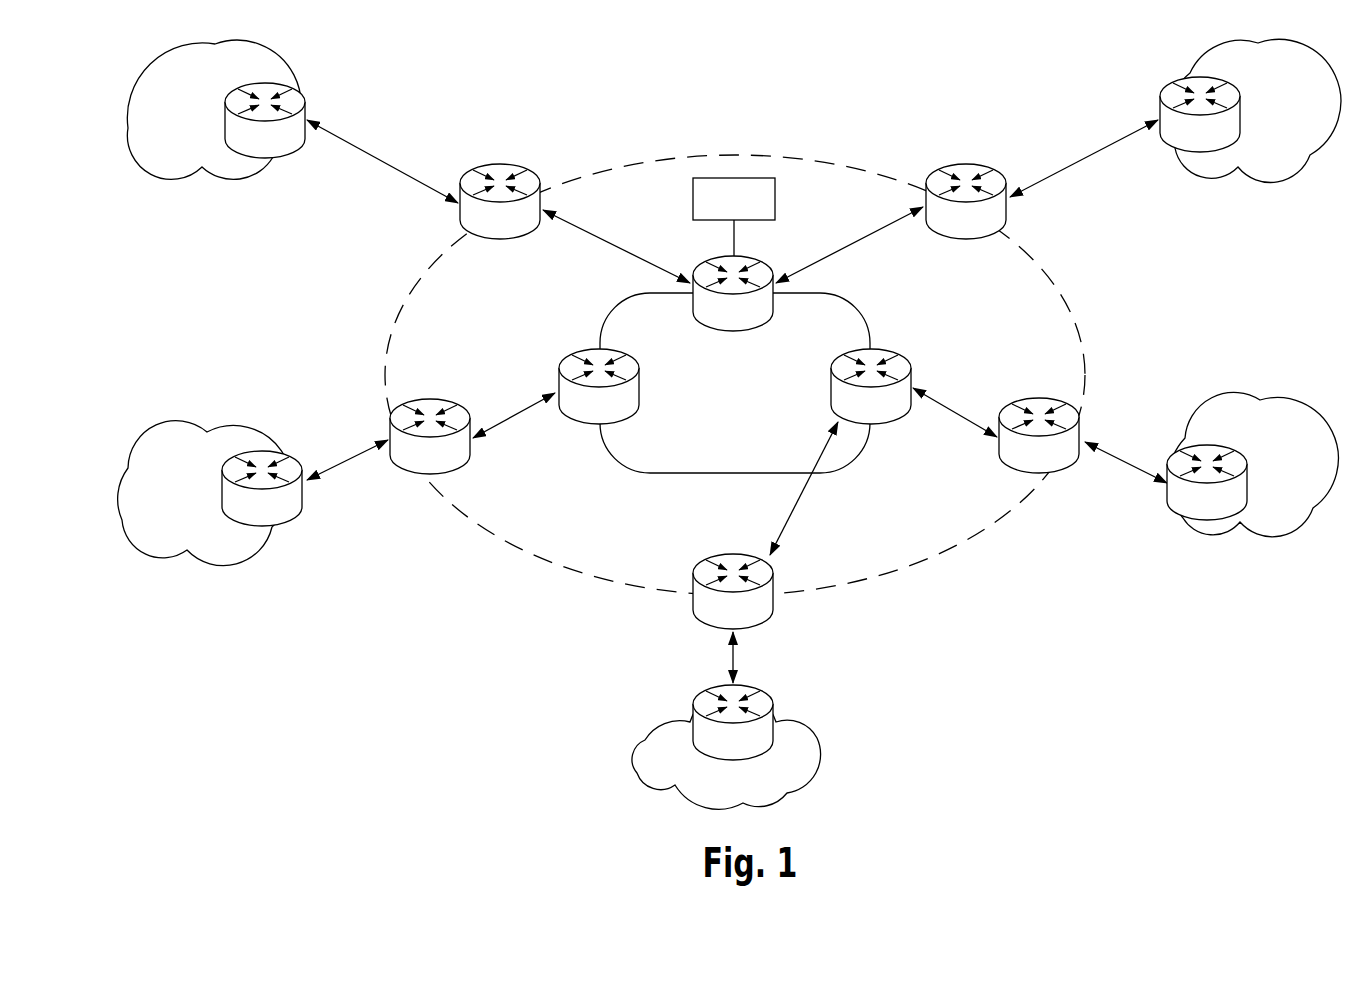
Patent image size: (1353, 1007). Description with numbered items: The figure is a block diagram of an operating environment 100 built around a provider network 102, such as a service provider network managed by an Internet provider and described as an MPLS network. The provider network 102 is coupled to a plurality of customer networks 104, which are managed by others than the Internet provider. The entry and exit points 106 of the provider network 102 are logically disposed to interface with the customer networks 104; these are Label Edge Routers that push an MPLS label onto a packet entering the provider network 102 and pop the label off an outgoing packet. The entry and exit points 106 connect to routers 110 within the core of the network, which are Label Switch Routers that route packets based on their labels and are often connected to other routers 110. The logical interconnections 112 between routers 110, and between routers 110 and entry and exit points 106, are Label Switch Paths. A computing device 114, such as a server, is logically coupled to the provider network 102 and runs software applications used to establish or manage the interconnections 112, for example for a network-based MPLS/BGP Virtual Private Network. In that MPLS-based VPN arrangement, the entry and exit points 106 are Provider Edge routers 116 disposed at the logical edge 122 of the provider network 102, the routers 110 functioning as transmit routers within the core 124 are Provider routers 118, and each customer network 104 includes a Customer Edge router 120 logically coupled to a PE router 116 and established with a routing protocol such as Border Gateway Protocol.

The operating environment 100 is at (793, 97).
The provider network 102 is at (862, 157).
The customer networks 104 is at (147, 128).
The entry and exit points 106 is at (421, 193).
The routers 110 is at (730, 314).
The logical interconnections 112 is at (628, 261).
The computing device 114 is at (716, 217).
The Provider Edge router 116 is at (735, 411).
The Provider router 118 is at (735, 340).
The Customer Edge router 120 is at (734, 418).
The logical edge 122 is at (605, 580).
The core 124 is at (655, 476).